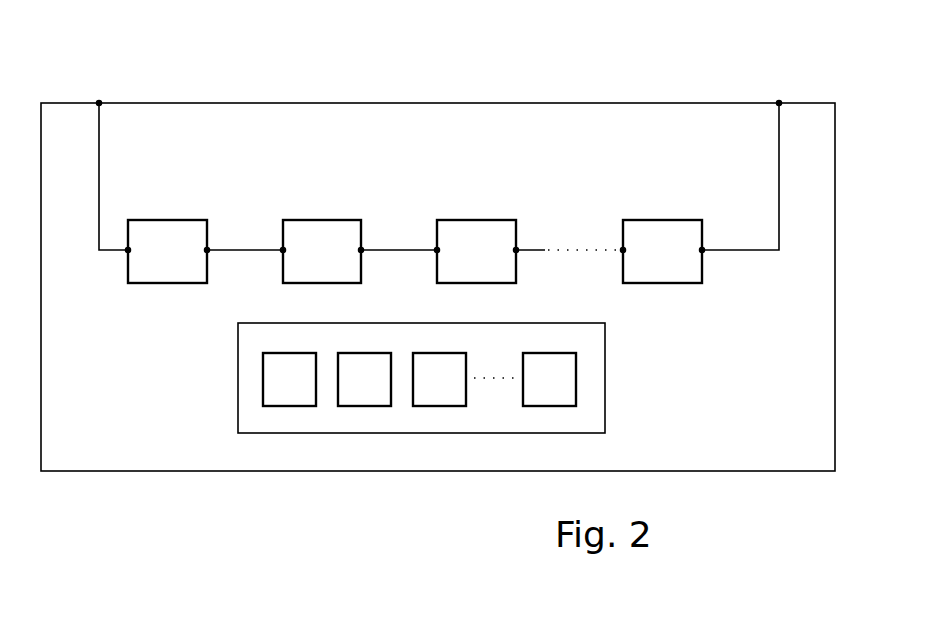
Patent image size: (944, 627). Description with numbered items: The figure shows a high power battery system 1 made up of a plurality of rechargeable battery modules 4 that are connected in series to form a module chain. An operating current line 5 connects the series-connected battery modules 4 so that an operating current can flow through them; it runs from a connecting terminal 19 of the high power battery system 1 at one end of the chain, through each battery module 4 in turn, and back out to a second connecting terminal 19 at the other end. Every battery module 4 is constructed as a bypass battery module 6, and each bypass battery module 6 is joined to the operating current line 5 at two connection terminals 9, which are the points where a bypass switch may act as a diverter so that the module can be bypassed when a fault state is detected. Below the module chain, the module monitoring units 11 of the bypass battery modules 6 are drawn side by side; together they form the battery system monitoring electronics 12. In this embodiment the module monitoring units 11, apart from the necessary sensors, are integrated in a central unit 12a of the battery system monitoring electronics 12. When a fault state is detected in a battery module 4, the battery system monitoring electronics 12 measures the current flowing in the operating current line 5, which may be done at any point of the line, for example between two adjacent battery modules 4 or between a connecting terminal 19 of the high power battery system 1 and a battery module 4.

The high power battery system 1 is at (752, 460).
The rechargeable battery module 4 is at (163, 250).
The operating current line 5 is at (99, 167).
The bypass battery module 6 is at (175, 220).
The connection terminal 9 is at (127, 253).
The module monitoring unit 11 is at (288, 362).
The battery system monitoring electronics 12 is at (602, 398).
The central unit 12a is at (602, 352).
The connecting terminal 19 is at (100, 102).